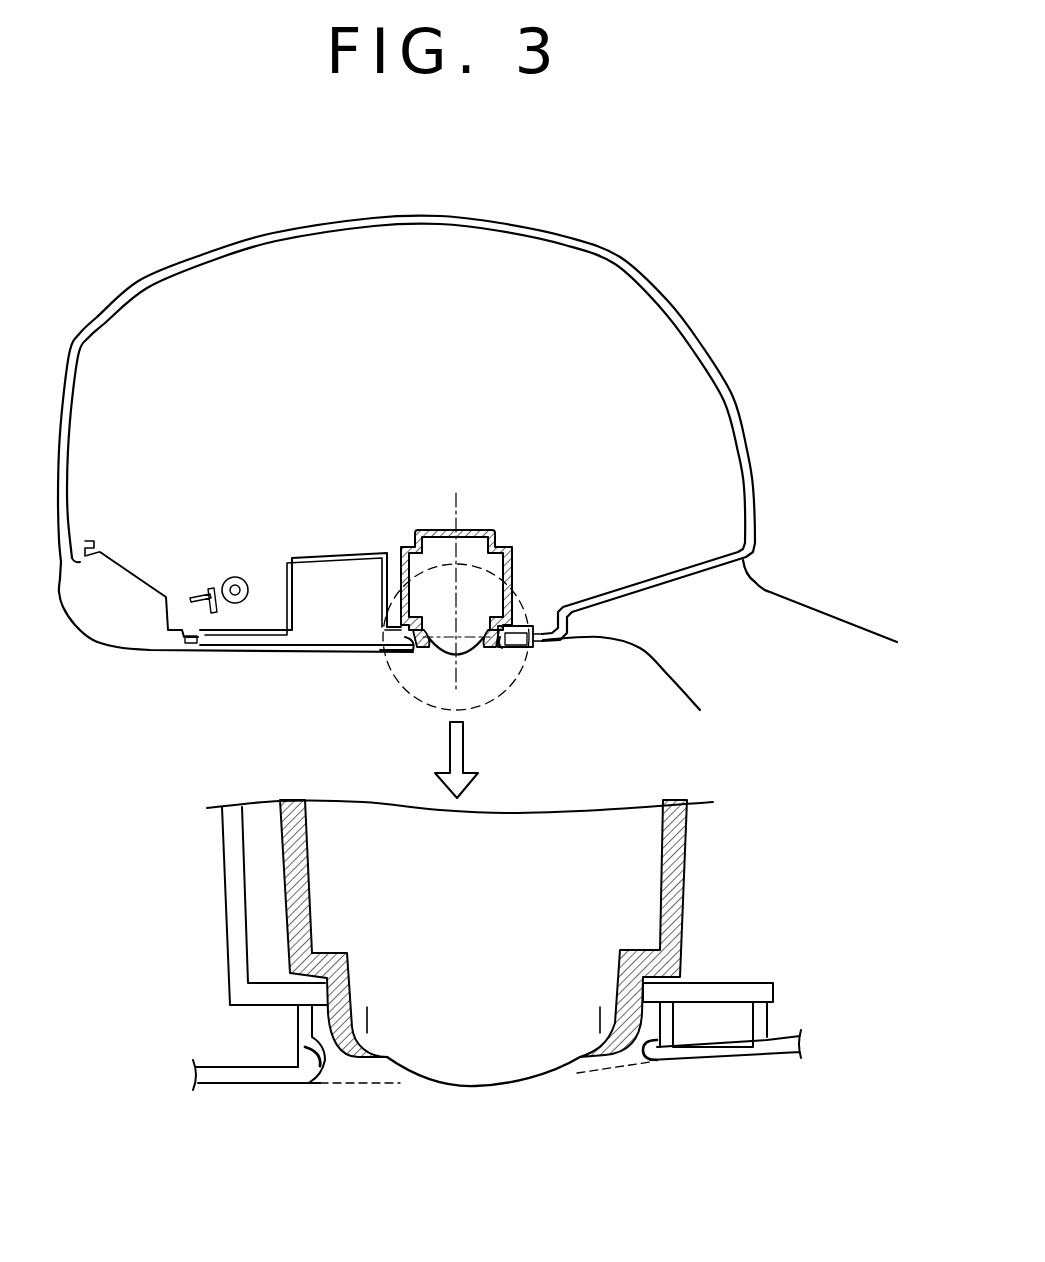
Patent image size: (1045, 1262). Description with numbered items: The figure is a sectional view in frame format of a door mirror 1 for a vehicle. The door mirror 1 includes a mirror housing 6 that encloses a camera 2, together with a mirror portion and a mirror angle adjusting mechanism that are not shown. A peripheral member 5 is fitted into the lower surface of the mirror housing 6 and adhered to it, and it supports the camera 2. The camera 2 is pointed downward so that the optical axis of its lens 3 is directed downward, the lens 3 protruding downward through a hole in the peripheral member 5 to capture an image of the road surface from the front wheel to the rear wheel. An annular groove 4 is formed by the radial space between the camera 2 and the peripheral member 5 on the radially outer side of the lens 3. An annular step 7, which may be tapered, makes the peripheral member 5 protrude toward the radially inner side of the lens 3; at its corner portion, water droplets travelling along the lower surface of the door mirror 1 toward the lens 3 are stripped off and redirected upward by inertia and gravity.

The door mirror 1 is at (433, 214).
The camera 2 is at (512, 575).
The lens 3 is at (466, 656).
The groove 4 is at (421, 646).
The peripheral member 5 is at (336, 654).
The mirror housing 6 is at (624, 262).
The step 7 is at (412, 654).